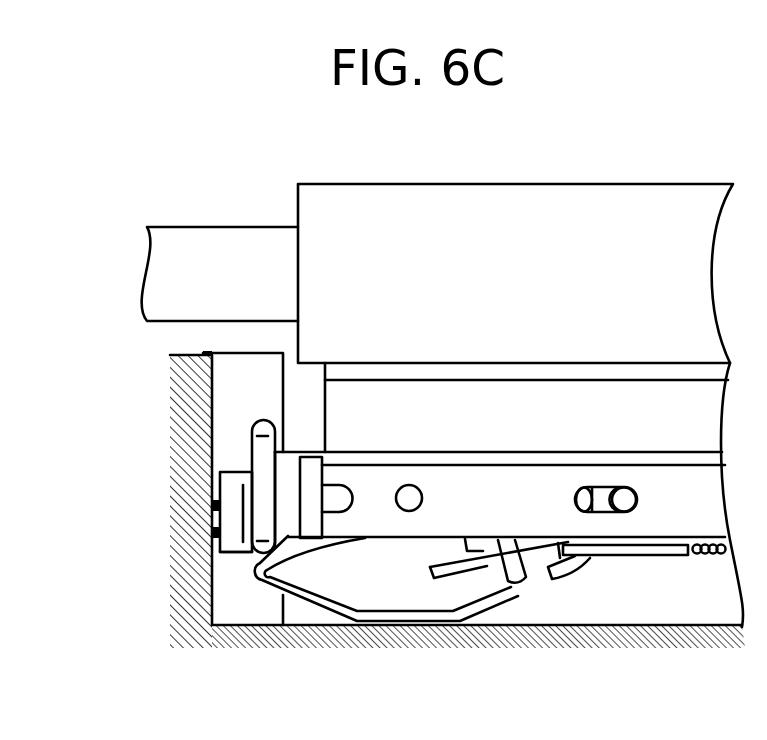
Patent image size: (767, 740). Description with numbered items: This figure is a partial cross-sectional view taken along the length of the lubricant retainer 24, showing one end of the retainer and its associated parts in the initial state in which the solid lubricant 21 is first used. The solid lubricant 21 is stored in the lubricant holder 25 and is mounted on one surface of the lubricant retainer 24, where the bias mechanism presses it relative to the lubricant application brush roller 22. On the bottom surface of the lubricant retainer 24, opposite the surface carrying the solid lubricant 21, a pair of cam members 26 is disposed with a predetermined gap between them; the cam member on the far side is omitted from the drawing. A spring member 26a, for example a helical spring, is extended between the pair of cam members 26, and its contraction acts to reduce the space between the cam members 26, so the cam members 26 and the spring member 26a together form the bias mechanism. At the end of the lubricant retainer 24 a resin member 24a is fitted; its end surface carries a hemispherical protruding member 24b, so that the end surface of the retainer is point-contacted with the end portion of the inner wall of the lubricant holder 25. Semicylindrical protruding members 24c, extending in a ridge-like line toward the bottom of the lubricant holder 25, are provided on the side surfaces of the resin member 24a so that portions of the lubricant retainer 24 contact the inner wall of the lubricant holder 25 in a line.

The lubricant application brush roller 22 is at (527, 188).
The solid lubricant 21 is at (588, 366).
The lubricant retainer 24 is at (527, 489).
The resin member 24a is at (228, 540).
The protruding member 24b is at (213, 510).
The semicylindrical protruding member 24c is at (262, 455).
The lubricant holder 25 is at (184, 395).
The cam member 26 is at (392, 580).
The spring member 26a is at (717, 556).